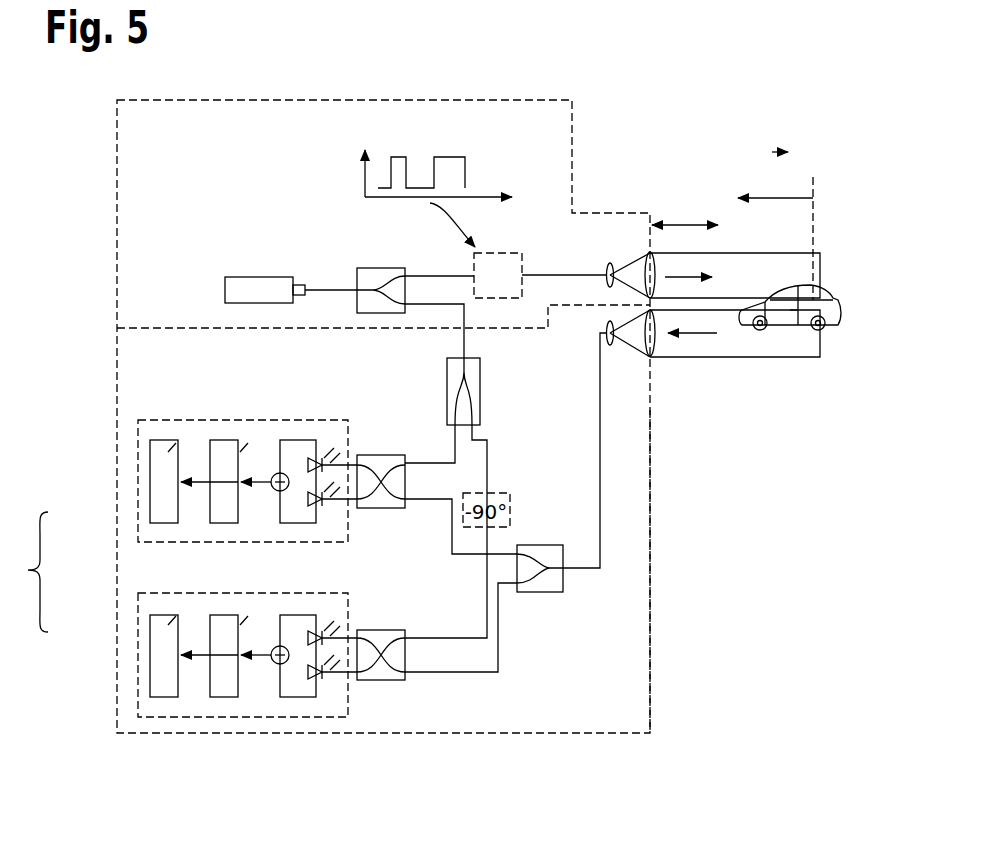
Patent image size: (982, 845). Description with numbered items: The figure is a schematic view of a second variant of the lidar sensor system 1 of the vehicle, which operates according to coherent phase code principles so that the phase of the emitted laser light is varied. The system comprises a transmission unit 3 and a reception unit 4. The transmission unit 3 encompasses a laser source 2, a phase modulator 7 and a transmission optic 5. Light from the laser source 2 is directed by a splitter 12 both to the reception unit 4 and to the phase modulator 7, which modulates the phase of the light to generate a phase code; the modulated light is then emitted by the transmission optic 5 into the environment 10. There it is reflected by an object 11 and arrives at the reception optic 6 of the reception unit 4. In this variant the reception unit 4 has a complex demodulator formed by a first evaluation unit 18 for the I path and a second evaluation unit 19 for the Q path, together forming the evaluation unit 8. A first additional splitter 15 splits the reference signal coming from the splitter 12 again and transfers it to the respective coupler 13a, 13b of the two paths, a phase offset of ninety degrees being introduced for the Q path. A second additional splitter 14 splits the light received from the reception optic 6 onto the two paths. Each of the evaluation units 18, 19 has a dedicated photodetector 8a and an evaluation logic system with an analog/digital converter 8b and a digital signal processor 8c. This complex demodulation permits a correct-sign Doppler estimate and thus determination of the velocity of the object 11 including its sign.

The lidar sensor system 1 is at (92, 166).
The laser source 2 is at (277, 277).
The transmission unit 3 is at (575, 142).
The reception unit 4 is at (652, 478).
The transmission optic 5 is at (648, 258).
The reception optic 6 is at (653, 352).
The phase modulator 7 is at (524, 267).
The evaluation unit 8 is at (26, 572).
The photodetector 8a is at (298, 440).
The analog/digital converter 8b is at (222, 440).
The digital signal processor 8c is at (163, 440).
The environment 10 is at (866, 228).
The object 11 is at (804, 330).
The splitter 12 is at (370, 268).
The coupler 13a is at (383, 455).
The coupler 13b is at (383, 680).
The second additional splitter 14 is at (545, 594).
The first additional splitter 15 is at (483, 393).
The first evaluation unit 18 is at (202, 444).
The second evaluation unit 19 is at (163, 697).